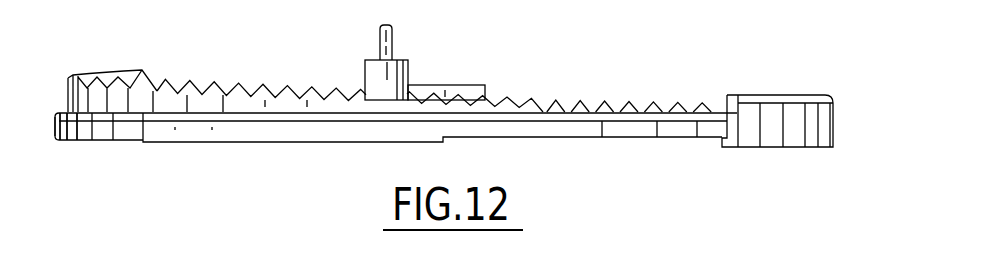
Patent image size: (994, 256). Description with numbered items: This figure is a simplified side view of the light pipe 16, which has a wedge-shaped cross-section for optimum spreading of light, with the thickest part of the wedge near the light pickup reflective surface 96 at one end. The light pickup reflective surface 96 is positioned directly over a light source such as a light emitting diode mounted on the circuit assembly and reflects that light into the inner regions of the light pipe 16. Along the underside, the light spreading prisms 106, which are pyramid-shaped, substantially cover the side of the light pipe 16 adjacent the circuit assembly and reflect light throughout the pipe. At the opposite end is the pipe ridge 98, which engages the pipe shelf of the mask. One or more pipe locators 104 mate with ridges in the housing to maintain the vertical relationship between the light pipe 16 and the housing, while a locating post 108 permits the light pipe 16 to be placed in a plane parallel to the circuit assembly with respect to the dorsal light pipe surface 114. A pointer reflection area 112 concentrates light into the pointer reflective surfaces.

The light pipe 16 is at (82, 138).
The light pickup reflective surface 96 is at (83, 78).
The pipe ridge 98 is at (823, 118).
The pipe locators 104 is at (320, 132).
The light spreading prisms 106 is at (222, 85).
The locating posts 108 is at (365, 60).
The pointer reflection area 112 is at (455, 87).
The dorsal light pipe surface 114 is at (615, 128).